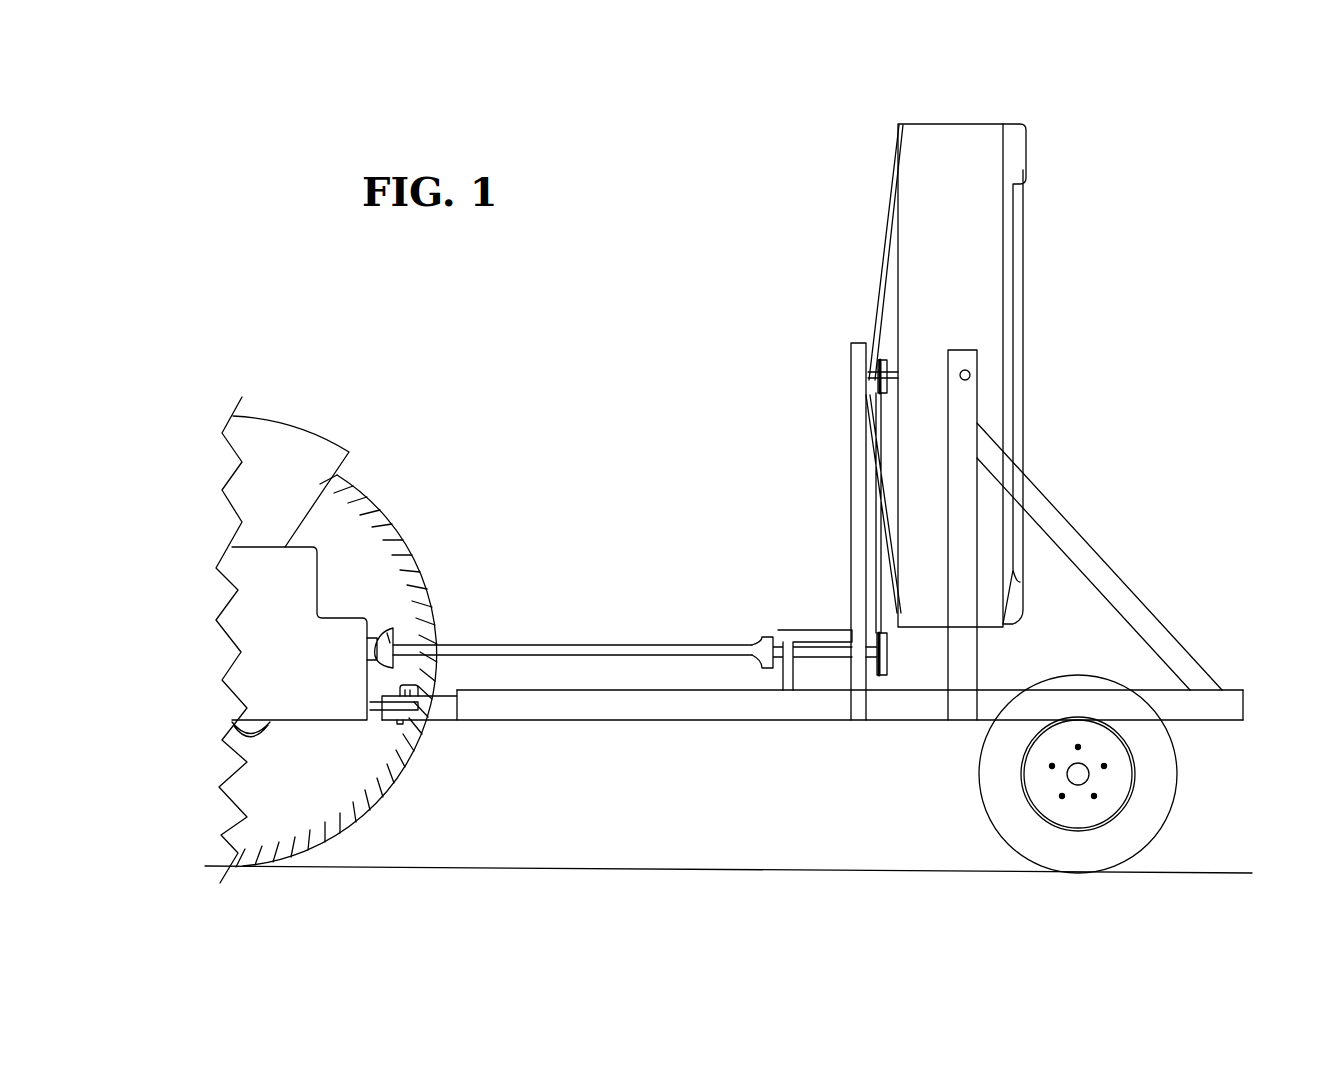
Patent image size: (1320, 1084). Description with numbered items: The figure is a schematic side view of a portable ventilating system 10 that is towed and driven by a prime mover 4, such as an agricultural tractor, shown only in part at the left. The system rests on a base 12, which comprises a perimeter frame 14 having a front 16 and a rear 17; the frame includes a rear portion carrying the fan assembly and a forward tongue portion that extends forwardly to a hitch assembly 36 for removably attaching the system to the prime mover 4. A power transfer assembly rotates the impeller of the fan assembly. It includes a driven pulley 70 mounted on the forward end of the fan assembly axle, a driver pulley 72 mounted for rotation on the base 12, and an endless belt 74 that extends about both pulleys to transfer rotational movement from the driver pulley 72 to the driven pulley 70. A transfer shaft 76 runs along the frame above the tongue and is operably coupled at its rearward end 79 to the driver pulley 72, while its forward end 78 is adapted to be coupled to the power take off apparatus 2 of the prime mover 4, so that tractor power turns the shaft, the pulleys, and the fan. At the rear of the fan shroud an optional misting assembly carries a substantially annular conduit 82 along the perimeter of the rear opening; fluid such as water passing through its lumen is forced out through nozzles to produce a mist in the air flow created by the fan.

The power take off apparatus 2 is at (297, 617).
The prime mover 4 is at (341, 428).
The portable ventilating system 10 is at (652, 378).
The base 12 is at (818, 760).
The perimeter frame 14 is at (677, 708).
The front 16 is at (478, 708).
The rear 17 is at (1232, 712).
The hitch assembly 36 is at (440, 710).
The driven pulley 70 is at (880, 345).
The driver pulley 72 is at (887, 660).
The endless belt 74 is at (887, 566).
The transfer shaft 76 is at (532, 652).
The forward end 78 is at (393, 628).
The rearward end 79 is at (762, 650).
The conduit 82 is at (1024, 303).